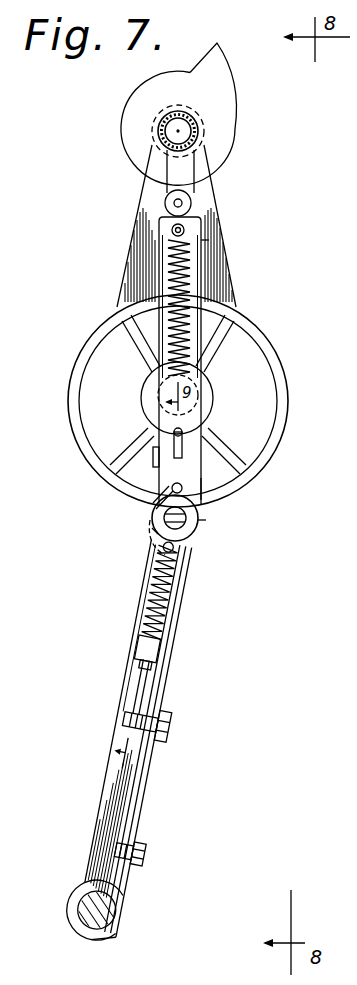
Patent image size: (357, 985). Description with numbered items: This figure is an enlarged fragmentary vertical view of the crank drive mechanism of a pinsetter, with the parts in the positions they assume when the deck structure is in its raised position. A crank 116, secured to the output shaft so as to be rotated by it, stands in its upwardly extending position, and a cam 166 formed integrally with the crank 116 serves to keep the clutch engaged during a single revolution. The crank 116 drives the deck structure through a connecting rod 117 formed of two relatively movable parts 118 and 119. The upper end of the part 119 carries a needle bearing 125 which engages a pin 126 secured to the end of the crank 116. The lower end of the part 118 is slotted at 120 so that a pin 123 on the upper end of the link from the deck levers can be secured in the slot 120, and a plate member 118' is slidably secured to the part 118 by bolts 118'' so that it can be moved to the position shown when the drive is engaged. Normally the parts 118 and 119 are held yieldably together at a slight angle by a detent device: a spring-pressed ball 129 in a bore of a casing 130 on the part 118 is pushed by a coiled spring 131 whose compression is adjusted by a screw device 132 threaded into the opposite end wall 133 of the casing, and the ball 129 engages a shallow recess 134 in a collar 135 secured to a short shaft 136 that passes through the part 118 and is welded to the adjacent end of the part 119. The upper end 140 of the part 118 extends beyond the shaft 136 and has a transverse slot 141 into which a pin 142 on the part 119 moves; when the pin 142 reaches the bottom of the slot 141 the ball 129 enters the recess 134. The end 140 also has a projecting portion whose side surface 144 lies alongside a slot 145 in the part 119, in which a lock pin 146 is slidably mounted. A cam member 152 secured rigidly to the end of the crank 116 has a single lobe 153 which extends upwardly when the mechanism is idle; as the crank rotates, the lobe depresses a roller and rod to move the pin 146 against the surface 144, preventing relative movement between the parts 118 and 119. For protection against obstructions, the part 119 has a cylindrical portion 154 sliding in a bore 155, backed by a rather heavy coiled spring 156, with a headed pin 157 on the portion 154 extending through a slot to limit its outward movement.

The crank 116 is at (212, 265).
The connecting rod 117 is at (204, 546).
The connecting rod part 118 is at (126, 742).
The plate member 118' is at (162, 739).
The bolts 118'' is at (171, 783).
The connecting rod part 119 is at (150, 386).
The slot 120 is at (101, 936).
The pin 123 is at (84, 920).
The needle bearing 125 is at (200, 131).
The pin 126 is at (198, 142).
The spring-pressed ball 129 is at (194, 561).
The casing 130 is at (186, 592).
The coiled spring 131 is at (166, 568).
The screw device 132 is at (140, 668).
The end wall 133 is at (166, 677).
The shallow recess 134 is at (202, 523).
The collar 135 is at (208, 519).
The short shaft 136 is at (154, 530).
The upper end 140 is at (201, 492).
The transverse slot 141 is at (168, 492).
The pin 142 is at (164, 501).
The side surface 144 is at (160, 457).
The slot 145 is at (184, 463).
The pin 146 is at (197, 428).
The cam member 152 is at (212, 100).
The lobe 153 is at (218, 48).
The cylindrical portion 154 is at (186, 177).
The bore 155 is at (208, 241).
The coiled spring 156 is at (185, 292).
The headed pin 157 is at (172, 229).
The cam 166 is at (258, 342).